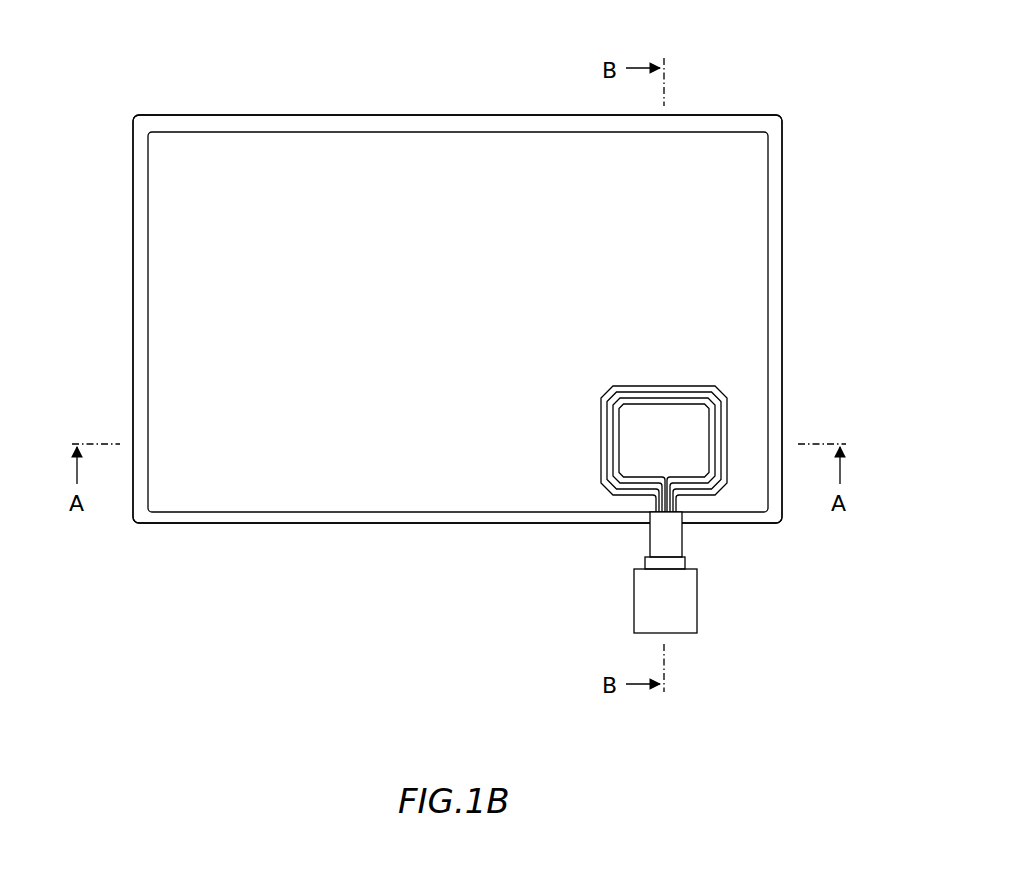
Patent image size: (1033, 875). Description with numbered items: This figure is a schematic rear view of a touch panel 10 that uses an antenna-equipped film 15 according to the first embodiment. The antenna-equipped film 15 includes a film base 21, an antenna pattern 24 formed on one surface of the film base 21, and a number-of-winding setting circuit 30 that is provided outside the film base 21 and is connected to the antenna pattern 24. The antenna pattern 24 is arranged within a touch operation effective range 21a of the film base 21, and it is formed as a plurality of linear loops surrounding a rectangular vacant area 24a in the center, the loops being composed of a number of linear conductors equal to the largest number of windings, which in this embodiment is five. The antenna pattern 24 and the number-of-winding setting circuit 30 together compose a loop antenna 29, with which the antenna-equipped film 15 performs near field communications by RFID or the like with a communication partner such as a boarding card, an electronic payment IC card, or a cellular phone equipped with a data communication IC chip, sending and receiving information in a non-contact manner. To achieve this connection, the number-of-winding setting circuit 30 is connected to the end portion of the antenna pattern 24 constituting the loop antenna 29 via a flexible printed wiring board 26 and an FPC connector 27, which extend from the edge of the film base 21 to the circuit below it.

The touch panel 10 is at (472, 84).
The antenna-equipped film 15 is at (745, 104).
The film base 21 is at (783, 157).
The touch operation effective range 21a is at (750, 205).
The antenna pattern 24 is at (722, 392).
The vacant area 24a is at (685, 440).
The flexible printed wiring board 26 is at (657, 545).
The FPC connector 27 is at (686, 562).
The loop antenna 29 is at (790, 536).
The number-of-winding setting circuit 30 is at (698, 605).